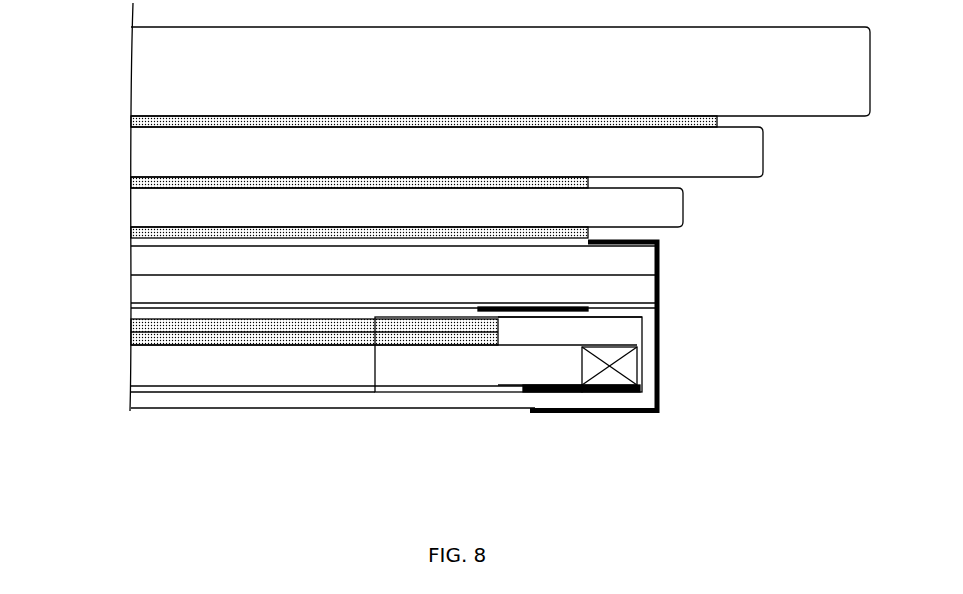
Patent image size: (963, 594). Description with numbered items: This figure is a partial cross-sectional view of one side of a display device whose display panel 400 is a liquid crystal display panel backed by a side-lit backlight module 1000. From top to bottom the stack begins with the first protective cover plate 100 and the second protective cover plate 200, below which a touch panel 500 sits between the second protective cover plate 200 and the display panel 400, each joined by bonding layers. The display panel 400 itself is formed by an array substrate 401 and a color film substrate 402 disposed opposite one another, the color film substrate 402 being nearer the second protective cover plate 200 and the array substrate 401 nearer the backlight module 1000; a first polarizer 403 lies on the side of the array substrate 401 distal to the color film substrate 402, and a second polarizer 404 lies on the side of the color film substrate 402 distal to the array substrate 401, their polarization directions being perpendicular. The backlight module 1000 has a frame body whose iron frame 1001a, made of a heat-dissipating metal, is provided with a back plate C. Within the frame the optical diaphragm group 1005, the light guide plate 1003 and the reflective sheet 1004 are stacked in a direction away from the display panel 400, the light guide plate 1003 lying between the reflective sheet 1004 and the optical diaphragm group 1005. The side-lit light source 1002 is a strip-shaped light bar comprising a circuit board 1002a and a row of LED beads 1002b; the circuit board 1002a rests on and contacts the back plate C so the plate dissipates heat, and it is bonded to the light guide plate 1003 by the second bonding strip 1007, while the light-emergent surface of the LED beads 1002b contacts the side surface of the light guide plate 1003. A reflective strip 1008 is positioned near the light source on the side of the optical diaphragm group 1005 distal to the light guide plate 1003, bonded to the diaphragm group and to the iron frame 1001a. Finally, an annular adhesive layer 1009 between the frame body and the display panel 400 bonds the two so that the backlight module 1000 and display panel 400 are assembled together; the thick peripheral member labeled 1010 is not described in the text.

The first protective cover plate 100 is at (866, 78).
The second protective cover plate 200 is at (750, 147).
The touch panel 500 is at (674, 205).
The display panel 400 is at (338, 273).
The array substrate 401 is at (146, 264).
The color film substrate 402 is at (146, 287).
The first polarizer 403 is at (361, 309).
The second polarizer 404 is at (146, 240).
The backlight module 1000 is at (375, 390).
The iron frame 1001a is at (648, 355).
The side-lit light source 1002 is at (593, 429).
The circuit board 1002a is at (568, 395).
The LED beads 1002b is at (632, 387).
The light guide plate 1003 is at (156, 367).
The reflective sheet 1004 is at (159, 389).
The optical diaphragm group 1005 is at (128, 319).
The second bonding strip 1007 is at (547, 383).
The reflective strip 1008 is at (527, 322).
The annular adhesive layer 1009 is at (578, 315).
The conductive shielding layer 1010 is at (661, 316).
The back plate C is at (375, 400).